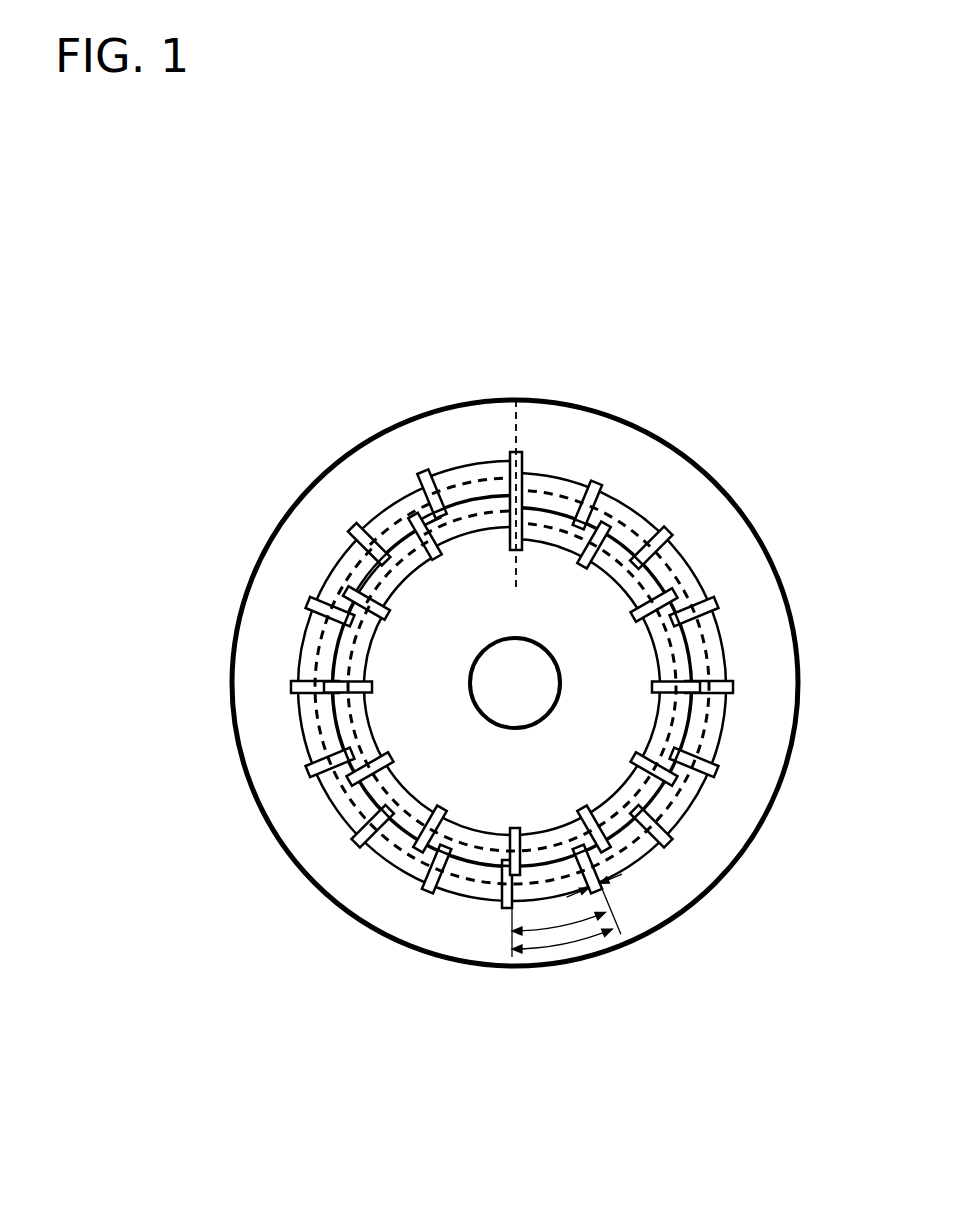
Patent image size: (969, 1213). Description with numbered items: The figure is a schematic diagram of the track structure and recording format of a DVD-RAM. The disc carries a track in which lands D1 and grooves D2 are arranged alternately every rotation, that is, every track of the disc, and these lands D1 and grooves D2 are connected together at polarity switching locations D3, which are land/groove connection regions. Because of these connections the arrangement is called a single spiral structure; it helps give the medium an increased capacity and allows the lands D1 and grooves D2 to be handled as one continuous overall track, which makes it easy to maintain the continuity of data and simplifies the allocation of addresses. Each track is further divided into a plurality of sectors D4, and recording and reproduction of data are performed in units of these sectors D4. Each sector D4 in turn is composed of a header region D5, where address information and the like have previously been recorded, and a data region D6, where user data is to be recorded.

The lands D1 is at (697, 570).
The grooves D2 is at (703, 635).
The polarity switching locations D3 is at (516, 400).
The sectors D4 is at (537, 953).
The header region D5 is at (627, 886).
The data region D6 is at (573, 927).